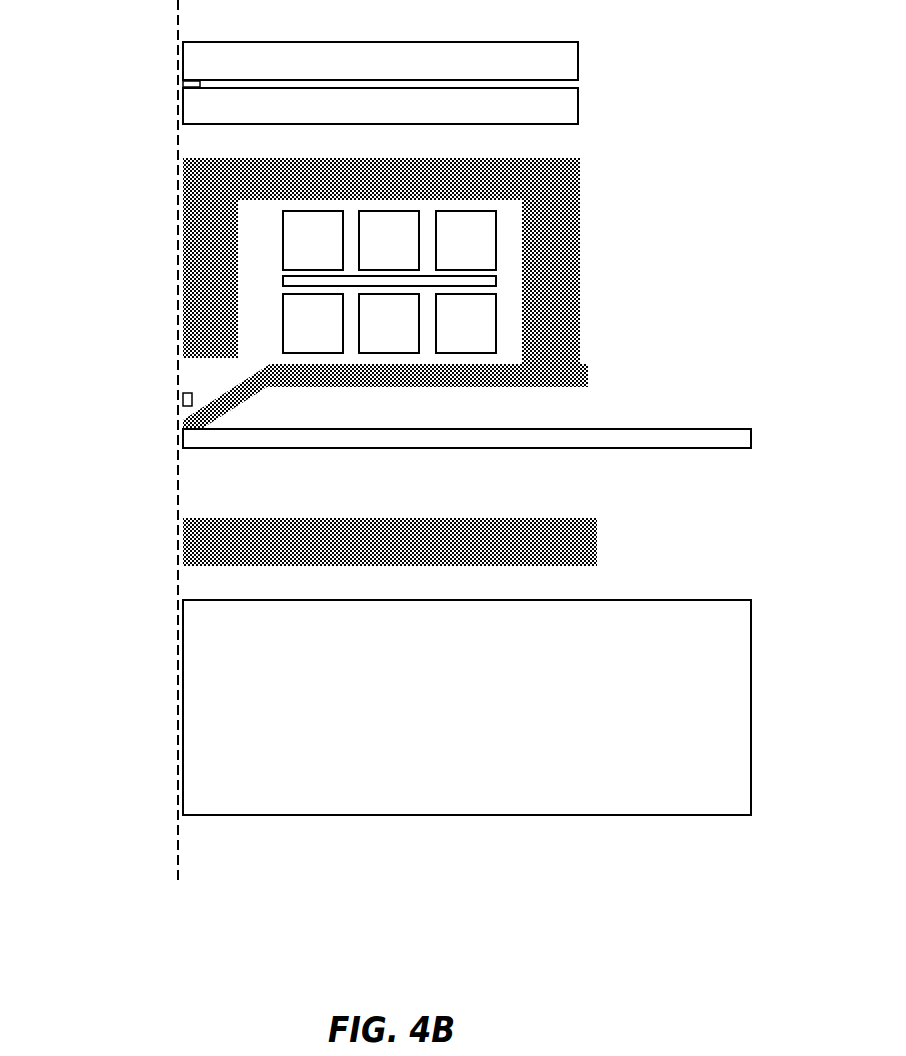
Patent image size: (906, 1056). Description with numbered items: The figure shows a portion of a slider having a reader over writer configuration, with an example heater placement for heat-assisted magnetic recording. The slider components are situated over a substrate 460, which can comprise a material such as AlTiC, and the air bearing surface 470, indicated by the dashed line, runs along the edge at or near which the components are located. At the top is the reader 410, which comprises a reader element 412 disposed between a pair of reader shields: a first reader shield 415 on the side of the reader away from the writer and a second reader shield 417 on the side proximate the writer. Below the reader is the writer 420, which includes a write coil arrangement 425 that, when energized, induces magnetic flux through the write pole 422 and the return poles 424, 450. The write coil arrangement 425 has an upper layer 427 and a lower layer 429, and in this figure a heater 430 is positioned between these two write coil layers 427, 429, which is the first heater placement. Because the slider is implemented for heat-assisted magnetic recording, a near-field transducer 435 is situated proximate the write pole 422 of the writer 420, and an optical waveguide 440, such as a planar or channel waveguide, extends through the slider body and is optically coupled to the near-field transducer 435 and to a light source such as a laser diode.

The reader 410 is at (374, 85).
The reader element 412 is at (195, 82).
The first reader shield 415 is at (578, 57).
The second reader shield 417 is at (578, 103).
The writer 420 is at (333, 278).
The write pole 422 is at (185, 418).
The return pole 424 is at (192, 180).
The write coil arrangement 425 is at (467, 247).
The upper layer 427 is at (507, 235).
The lower layer 429 is at (505, 325).
The heater 430 is at (497, 277).
The near-field transducer 435 is at (217, 384).
The optical waveguide 440 is at (185, 433).
The return pole 450 is at (190, 535).
The substrate 460 is at (197, 680).
The air bearing surface 470 is at (175, 782).